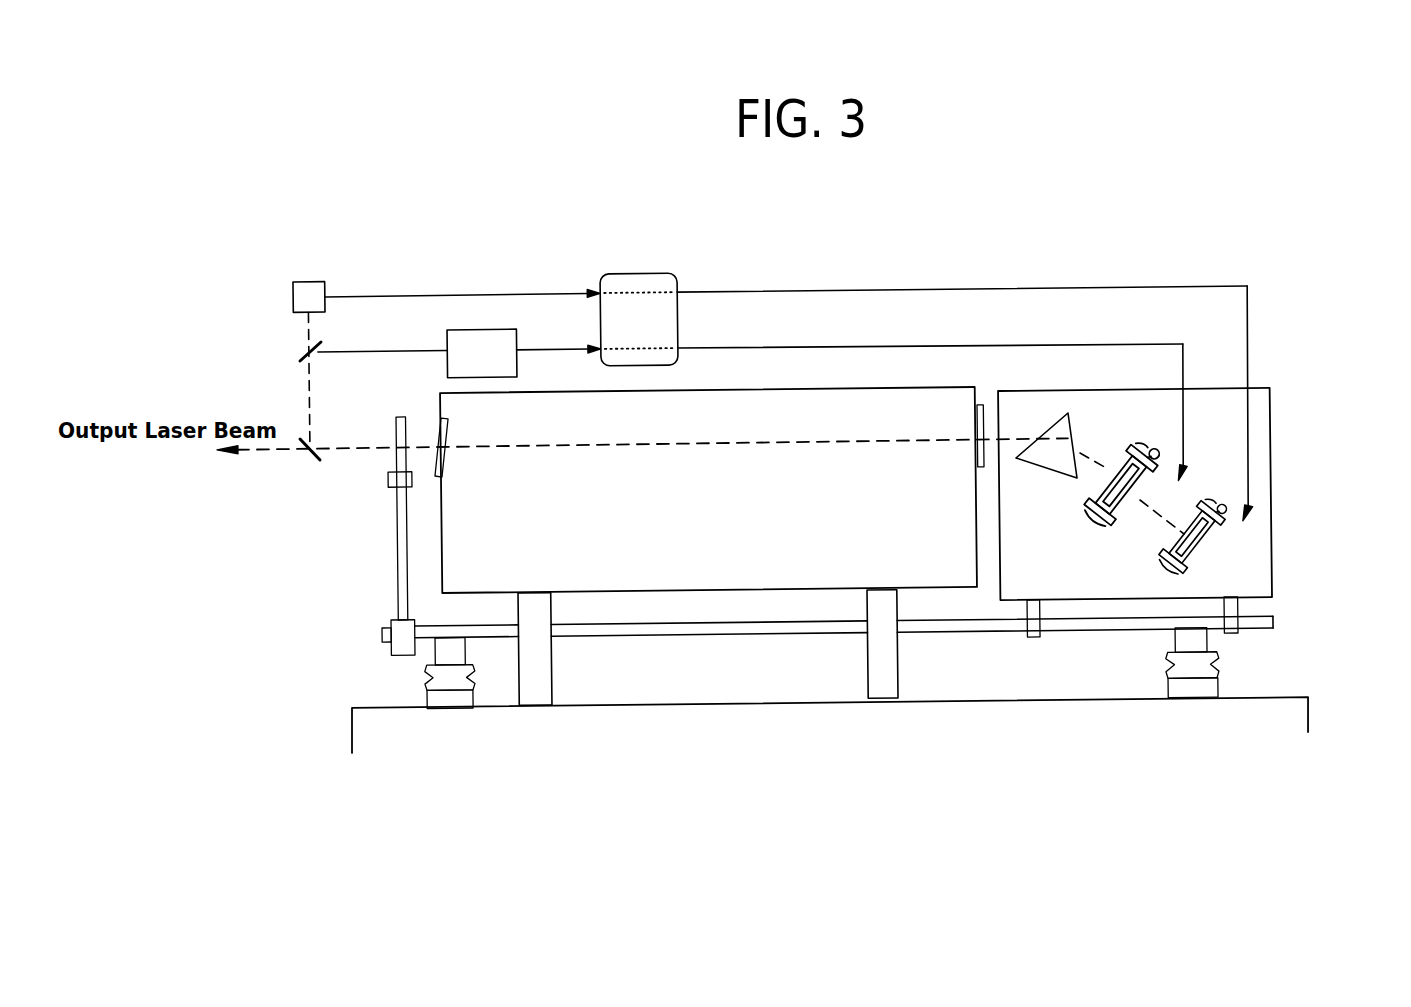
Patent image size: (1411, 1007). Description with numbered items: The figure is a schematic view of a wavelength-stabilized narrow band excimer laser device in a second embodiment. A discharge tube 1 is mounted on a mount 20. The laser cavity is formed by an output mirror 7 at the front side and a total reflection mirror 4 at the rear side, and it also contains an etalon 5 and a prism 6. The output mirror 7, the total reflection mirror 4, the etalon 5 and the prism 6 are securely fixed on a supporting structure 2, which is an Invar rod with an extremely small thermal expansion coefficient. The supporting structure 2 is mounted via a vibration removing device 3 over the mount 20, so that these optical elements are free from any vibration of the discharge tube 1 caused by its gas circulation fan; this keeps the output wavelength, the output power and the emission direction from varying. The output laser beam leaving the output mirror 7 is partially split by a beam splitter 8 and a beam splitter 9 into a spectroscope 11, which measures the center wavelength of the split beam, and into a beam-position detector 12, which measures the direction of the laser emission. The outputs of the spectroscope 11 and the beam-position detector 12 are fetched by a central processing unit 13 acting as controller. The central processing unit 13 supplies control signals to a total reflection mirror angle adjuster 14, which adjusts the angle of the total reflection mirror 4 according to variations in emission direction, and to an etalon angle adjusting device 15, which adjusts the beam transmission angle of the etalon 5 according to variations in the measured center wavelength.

The discharge tube 1 is at (853, 413).
The supporting structure 2 is at (703, 637).
The vibration removing device 3 is at (428, 674).
The total reflection mirror 4 is at (1196, 546).
The etalon 5 is at (1122, 502).
The prism 6 is at (1070, 413).
The output mirror 7 is at (390, 453).
The beam splitter 8 is at (305, 458).
The beam splitter 9 is at (305, 352).
The spectroscope 11 is at (495, 337).
The beam-position detector 12 is at (310, 292).
The central processing unit 13 is at (645, 303).
The total reflection mirror angle adjuster 14 is at (1263, 550).
The etalon angle adjusting device 15 is at (1206, 469).
The mount 20 is at (350, 730).